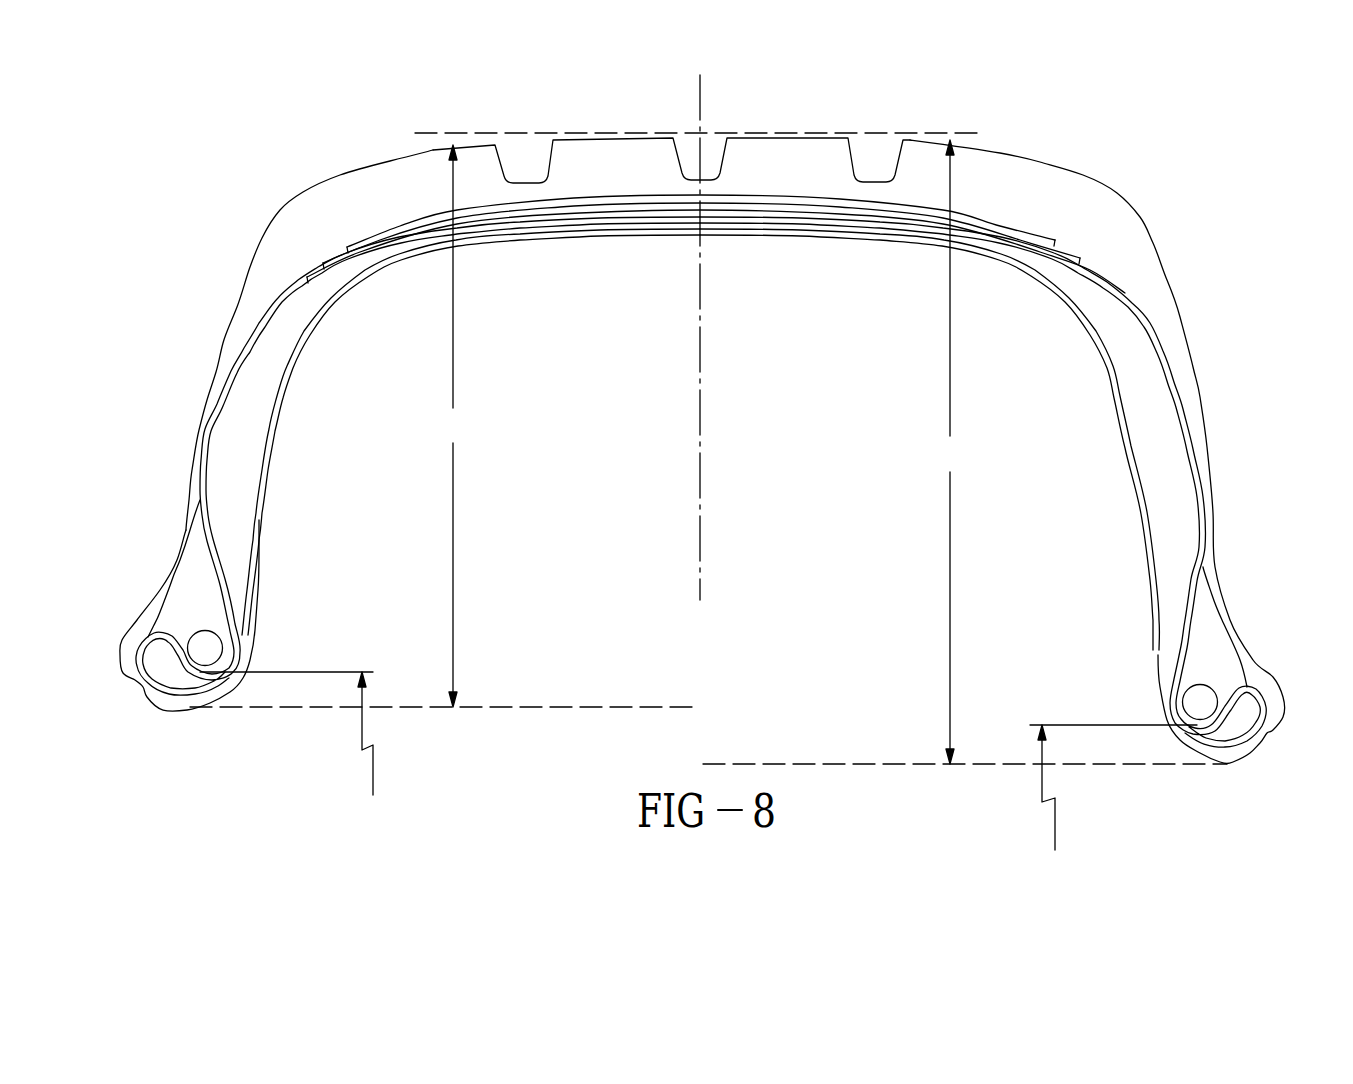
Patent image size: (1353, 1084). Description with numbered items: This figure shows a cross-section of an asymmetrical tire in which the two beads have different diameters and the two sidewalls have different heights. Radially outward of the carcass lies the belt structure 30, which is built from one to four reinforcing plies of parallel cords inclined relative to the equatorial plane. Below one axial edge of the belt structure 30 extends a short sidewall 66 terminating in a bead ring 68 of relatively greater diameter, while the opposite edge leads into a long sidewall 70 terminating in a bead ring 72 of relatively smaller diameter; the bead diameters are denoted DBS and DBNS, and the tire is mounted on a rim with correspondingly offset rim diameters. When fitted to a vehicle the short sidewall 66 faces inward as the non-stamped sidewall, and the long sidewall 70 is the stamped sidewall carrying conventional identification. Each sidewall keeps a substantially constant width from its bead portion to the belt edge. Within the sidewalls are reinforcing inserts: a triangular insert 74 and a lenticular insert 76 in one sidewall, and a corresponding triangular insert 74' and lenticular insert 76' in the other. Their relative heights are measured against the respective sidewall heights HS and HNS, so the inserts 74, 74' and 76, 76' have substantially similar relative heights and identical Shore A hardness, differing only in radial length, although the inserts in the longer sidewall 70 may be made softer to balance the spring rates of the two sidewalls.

The belt structure 30 is at (631, 197).
The short sidewall 66 is at (194, 443).
The bead ring 68 is at (205, 645).
The long sidewall 70 is at (1187, 347).
The bead ring 72 is at (1200, 700).
The triangular insert 74 is at (180, 605).
The triangular insert 74' is at (1251, 627).
The lenticular insert 76 is at (418, 456).
The lenticular insert 76' is at (983, 482).
The sidewall height HNS is at (465, 426).
The sidewall height HS is at (961, 452).
The bead diameter DBNS is at (400, 734).
The bead diameter DBS is at (1074, 788).